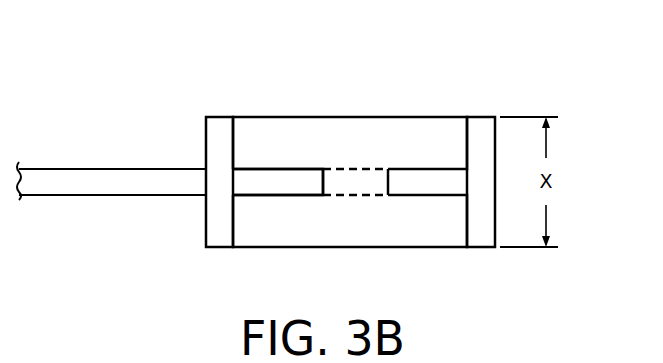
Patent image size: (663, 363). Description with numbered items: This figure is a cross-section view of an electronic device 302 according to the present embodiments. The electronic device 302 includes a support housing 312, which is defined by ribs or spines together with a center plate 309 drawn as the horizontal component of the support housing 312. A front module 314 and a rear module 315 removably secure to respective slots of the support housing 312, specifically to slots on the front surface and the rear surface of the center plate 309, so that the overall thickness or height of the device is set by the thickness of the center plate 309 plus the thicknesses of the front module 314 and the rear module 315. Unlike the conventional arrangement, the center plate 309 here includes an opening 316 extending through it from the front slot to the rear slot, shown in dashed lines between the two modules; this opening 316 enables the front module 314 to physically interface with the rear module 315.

The electronic device 302 is at (310, 63).
The center plate 309 is at (302, 192).
The support housing 312 is at (152, 135).
The front module 314 is at (353, 127).
The rear module 315 is at (392, 236).
The opening 316 is at (356, 196).